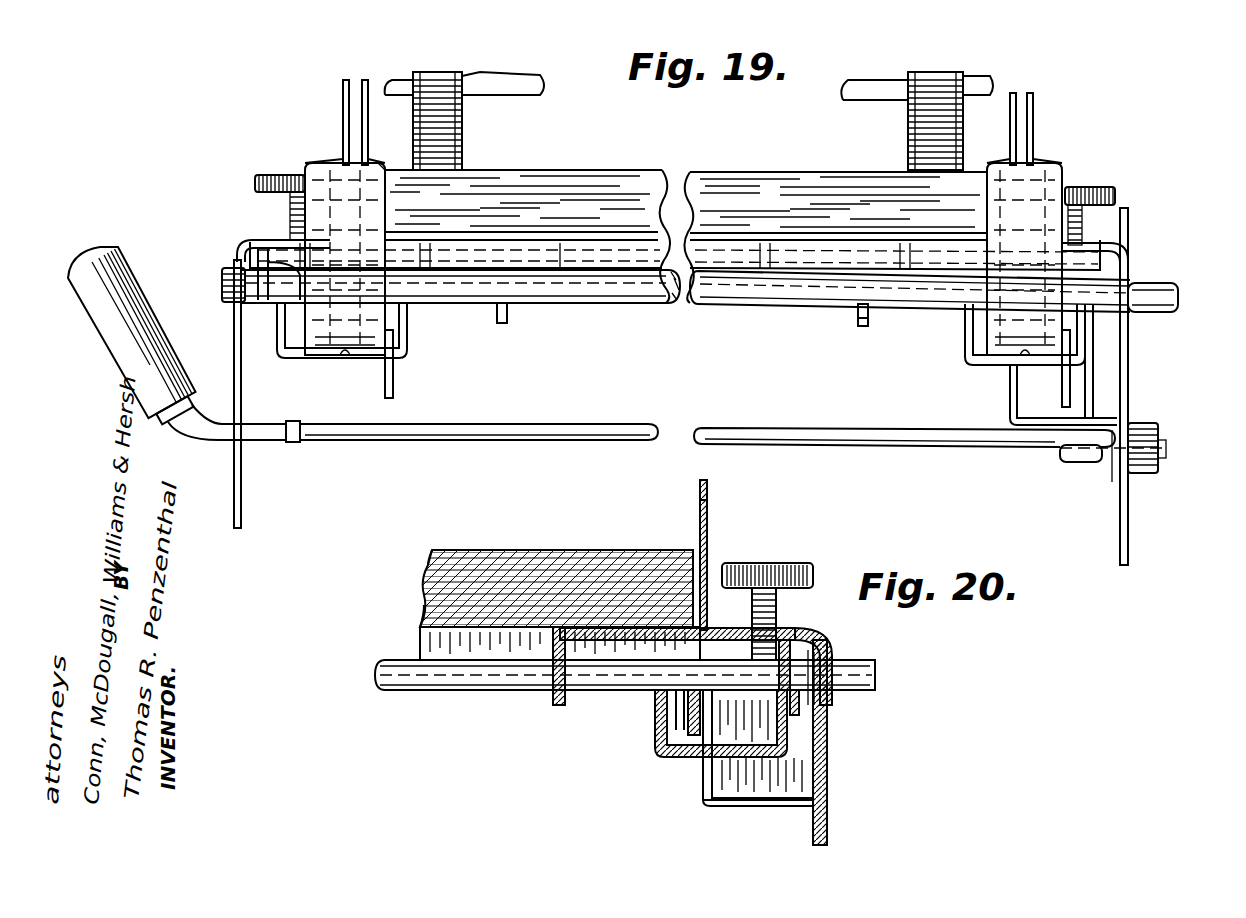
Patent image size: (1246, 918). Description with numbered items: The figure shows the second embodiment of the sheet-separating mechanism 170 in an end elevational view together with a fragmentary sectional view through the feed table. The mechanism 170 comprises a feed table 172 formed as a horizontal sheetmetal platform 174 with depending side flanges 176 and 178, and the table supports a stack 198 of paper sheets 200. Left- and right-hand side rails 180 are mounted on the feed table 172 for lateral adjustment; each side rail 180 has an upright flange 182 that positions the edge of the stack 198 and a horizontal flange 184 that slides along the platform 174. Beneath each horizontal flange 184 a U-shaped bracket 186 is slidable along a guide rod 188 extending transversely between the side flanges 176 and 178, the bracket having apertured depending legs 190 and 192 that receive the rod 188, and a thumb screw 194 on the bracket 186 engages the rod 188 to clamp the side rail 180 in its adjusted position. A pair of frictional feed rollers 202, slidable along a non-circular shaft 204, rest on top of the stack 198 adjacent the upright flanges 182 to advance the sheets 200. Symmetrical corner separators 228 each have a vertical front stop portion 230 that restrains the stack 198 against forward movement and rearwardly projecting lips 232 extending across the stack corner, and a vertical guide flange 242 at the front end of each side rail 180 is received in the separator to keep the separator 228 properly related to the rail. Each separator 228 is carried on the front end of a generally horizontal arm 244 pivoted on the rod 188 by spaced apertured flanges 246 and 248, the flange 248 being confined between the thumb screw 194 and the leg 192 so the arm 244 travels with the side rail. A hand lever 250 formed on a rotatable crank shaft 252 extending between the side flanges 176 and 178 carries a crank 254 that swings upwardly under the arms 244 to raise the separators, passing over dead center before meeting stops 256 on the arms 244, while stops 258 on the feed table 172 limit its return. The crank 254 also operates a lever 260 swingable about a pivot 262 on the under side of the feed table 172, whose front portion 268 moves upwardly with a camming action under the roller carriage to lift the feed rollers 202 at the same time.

In FIG. 19, the sheet-separating mechanism 170 is at (1148, 198).
In FIG. 19, the feed table 172 is at (233, 245).
In FIG. 20, the feed table 172 is at (830, 635).
In FIG. 19, the feed table platform 174 is at (712, 240).
In FIG. 20, the feed table platform 174 is at (420, 627).
In FIG. 19, the side flange 176 is at (1118, 520).
In FIG. 20, the side flange 176 is at (828, 815).
In FIG. 19, the side flange 178 is at (241, 492).
In FIG. 20, the side rail 180 is at (706, 485).
In FIG. 19, the upright flange 182 is at (348, 80).
In FIG. 20, the upright flange 182 is at (700, 502).
In FIG. 20, the horizontal flange 184 is at (690, 625).
In FIG. 19, the U-shaped bracket 186 is at (507, 325).
In FIG. 20, the U-shaped bracket 186 is at (556, 704).
In FIG. 19, the guide rod 188 is at (640, 305).
In FIG. 20, the guide rod 188 is at (420, 690).
In FIG. 19, the depending leg 190 is at (865, 328).
In FIG. 20, the depending leg 190 is at (568, 700).
In FIG. 19, the depending leg 192 is at (1100, 360).
In FIG. 20, the depending leg 192 is at (800, 715).
In FIG. 19, the thumb screw 194 is at (280, 175).
In FIG. 20, the thumb screw 194 is at (785, 562).
In FIG. 19, the stack 198 is at (530, 170).
In FIG. 20, the stack 198 is at (565, 550).
In FIG. 19, the paper sheets 200 is at (782, 178).
In FIG. 20, the paper sheets 200 is at (410, 555).
In FIG. 19, the feed roller 202 is at (462, 138).
In FIG. 19, the shaft 204 is at (548, 92).
In FIG. 19, the corner separator 228 is at (320, 163).
In FIG. 19, the front stop portion 230 is at (385, 192).
In FIG. 19, the lip 232 is at (385, 165).
In FIG. 19, the guide flange 242 is at (343, 92).
In FIG. 19, the arm 244 is at (318, 360).
In FIG. 20, the vertical flange 246 is at (658, 730).
In FIG. 20, the vertical flange 248 is at (822, 765).
In FIG. 19, the lever 250 is at (150, 318).
In FIG. 19, the crank shaft 252 is at (205, 440).
In FIG. 19, the crank 254 is at (510, 440).
In FIG. 19, the stop 256 is at (393, 388).
In FIG. 19, the stop 258 is at (1090, 462).
In FIG. 19, the lever 260 is at (1125, 332).
In FIG. 20, the lever 260 is at (818, 823).
In FIG. 19, the pivot 262 is at (1150, 312).
In FIG. 20, the pivot 262 is at (688, 692).
In FIG. 19, the front portion 268 is at (1128, 212).